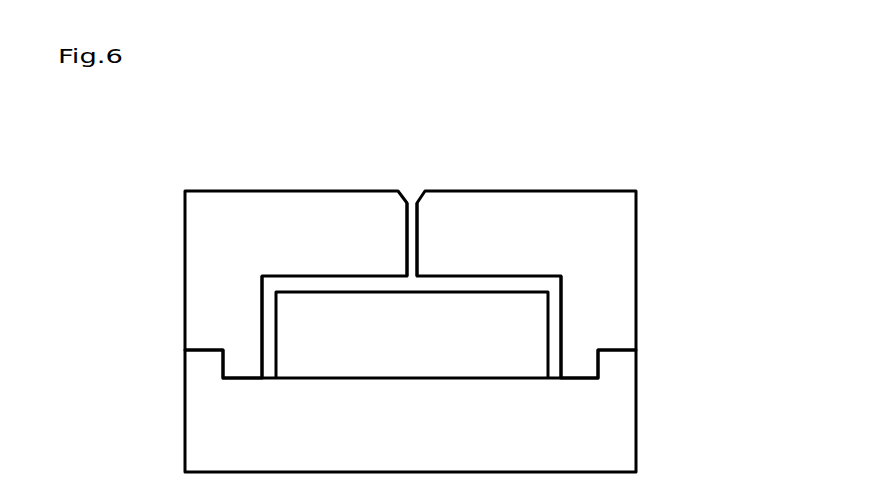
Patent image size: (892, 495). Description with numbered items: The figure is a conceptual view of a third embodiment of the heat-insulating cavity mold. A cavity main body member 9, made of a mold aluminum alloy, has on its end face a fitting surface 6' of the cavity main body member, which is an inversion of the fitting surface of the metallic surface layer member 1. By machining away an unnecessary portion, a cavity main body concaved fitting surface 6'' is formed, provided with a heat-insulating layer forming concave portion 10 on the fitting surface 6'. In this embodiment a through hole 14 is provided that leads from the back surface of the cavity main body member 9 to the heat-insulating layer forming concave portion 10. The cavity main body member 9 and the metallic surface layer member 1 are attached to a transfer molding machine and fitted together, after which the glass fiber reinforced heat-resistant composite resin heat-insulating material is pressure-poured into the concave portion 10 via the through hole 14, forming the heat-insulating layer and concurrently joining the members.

The metallic surface layer member 1 is at (587, 430).
The cavity main body member 9 is at (598, 221).
The through hole 14 is at (413, 233).
The heat-insulating layer forming concave portion 10 is at (532, 287).
The fitting surface of the cavity main body member 6' is at (656, 313).
The cavity main body concaved fitting surface 6'' is at (522, 348).